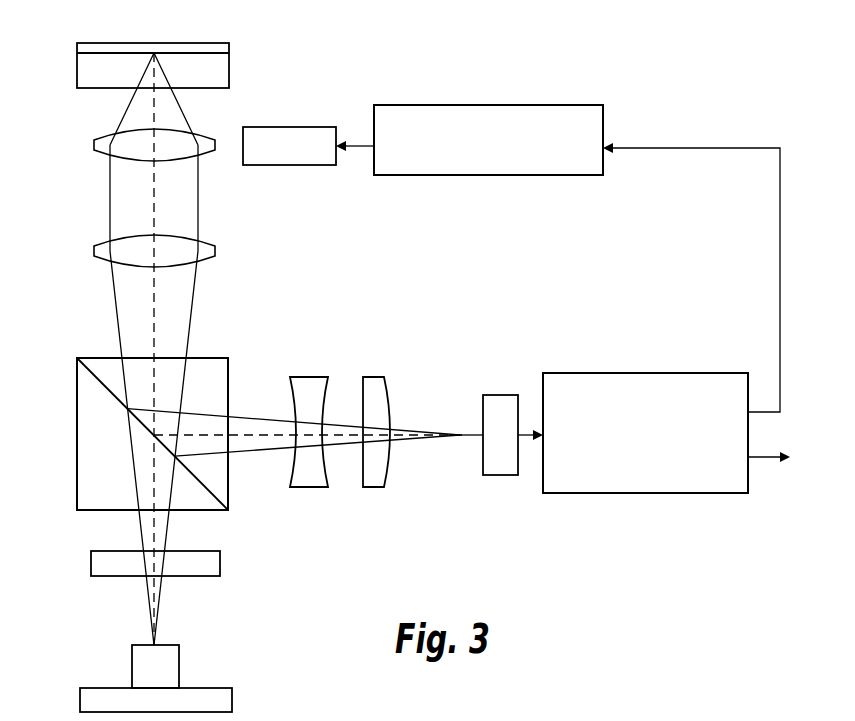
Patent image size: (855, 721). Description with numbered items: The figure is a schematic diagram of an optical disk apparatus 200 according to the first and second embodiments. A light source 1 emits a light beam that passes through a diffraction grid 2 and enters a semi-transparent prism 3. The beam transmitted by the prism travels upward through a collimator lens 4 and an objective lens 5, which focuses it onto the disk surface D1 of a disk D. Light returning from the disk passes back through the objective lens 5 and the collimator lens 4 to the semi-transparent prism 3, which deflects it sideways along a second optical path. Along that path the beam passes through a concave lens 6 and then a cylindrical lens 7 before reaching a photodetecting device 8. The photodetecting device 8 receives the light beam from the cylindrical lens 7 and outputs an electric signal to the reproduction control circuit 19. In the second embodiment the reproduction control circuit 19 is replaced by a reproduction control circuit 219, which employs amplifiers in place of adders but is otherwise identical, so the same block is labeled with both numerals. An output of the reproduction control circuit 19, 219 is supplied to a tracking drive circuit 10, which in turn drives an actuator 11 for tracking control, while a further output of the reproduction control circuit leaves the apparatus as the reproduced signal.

The optical disk apparatus 200 is at (56, 31).
The disk D is at (146, 43).
The disk surface D1 is at (229, 66).
The objective lens 5 is at (107, 136).
The collimator lens 4 is at (105, 243).
The semi-transparent prism 3 is at (77, 408).
The diffraction grid 2 is at (100, 552).
The light source 1 is at (132, 663).
The concave lens 6 is at (307, 377).
The cylindrical lens 7 is at (373, 377).
The photodetecting device 8 is at (505, 395).
The reproduction control circuit 19 is at (590, 373).
The reproduction control circuit 219 is at (645, 433).
The tracking drive circuit 10 is at (491, 105).
The actuator 11 is at (280, 127).